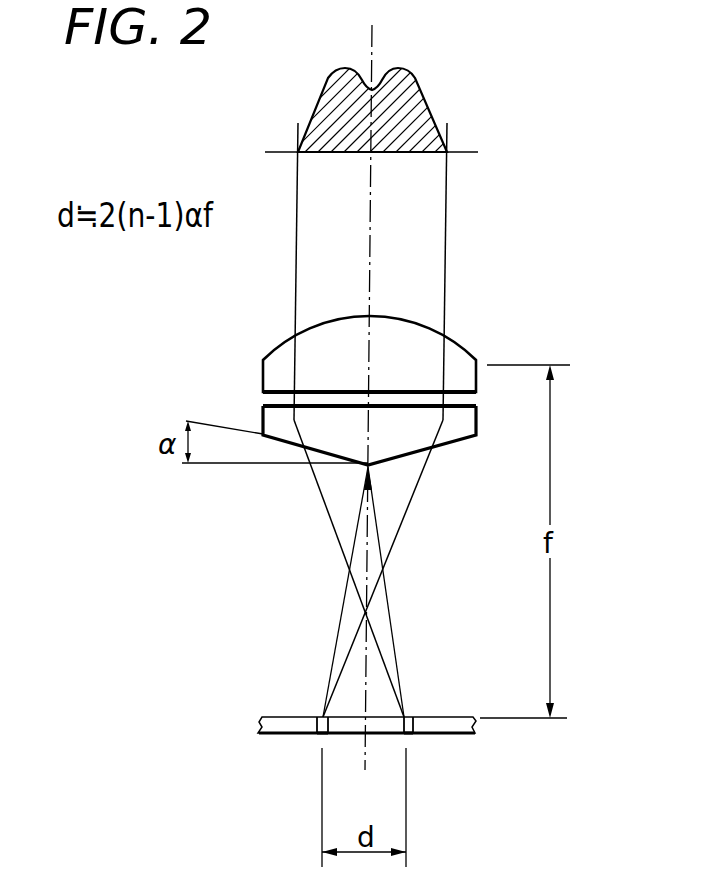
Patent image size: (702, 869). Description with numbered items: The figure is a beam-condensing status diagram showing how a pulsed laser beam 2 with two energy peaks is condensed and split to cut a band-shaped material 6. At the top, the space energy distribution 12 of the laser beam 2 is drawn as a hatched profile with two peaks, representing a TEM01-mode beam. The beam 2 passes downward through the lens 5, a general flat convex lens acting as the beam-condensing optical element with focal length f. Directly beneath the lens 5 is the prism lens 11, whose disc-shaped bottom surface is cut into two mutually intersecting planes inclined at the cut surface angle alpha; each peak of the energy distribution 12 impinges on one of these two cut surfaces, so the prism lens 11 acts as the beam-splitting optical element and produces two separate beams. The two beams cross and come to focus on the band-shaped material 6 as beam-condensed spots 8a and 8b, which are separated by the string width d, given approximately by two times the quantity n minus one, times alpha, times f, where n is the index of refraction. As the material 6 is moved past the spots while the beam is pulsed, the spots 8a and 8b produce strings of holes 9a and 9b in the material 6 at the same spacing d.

The space energy distribution 12 is at (430, 100).
The laser beam 2 is at (433, 240).
The lens 5 is at (453, 364).
The prism lens 11 is at (450, 436).
The band-shaped material 6 is at (272, 727).
The beam-condensed spot 8a is at (322, 717).
The beam-condensed spot 8b is at (404, 716).
The hole 9a is at (325, 735).
The hole 9b is at (413, 733).